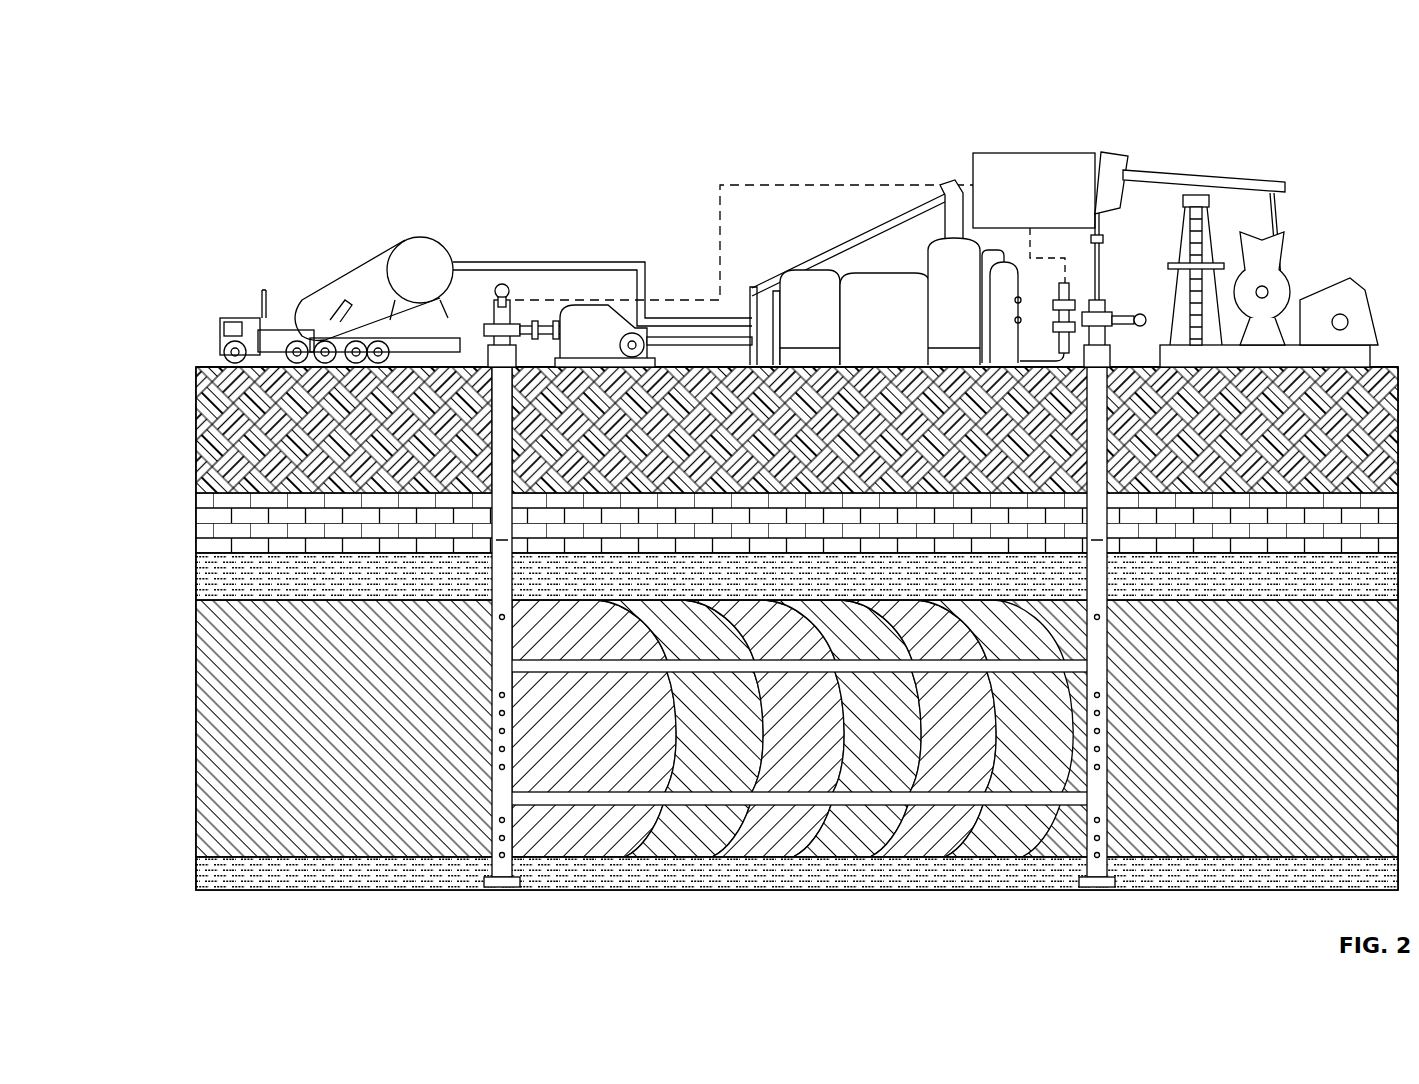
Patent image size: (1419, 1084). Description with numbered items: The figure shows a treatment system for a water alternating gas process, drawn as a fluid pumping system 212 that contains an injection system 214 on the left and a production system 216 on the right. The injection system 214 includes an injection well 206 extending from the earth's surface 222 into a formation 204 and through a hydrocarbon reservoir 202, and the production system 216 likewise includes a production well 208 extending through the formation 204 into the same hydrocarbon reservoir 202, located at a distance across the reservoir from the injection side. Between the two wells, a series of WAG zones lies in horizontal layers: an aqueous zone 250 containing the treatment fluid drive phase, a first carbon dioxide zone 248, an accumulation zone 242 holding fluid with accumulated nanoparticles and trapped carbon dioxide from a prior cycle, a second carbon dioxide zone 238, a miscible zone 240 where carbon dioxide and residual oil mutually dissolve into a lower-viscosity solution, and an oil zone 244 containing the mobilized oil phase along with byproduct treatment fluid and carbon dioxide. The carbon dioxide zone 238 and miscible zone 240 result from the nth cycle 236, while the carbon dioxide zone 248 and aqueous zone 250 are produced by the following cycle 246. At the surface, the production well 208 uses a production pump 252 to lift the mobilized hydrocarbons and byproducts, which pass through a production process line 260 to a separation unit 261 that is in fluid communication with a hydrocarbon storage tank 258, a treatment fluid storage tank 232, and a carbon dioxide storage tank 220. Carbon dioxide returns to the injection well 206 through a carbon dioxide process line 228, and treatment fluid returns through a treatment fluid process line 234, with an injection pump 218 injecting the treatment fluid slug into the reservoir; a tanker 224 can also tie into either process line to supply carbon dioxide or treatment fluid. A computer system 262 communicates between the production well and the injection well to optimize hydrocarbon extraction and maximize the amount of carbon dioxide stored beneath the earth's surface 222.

The hydrocarbon reservoir 202 is at (1230, 835).
The formation 204 is at (183, 367).
The injection well 206 is at (474, 436).
The production well 208 is at (1153, 436).
The fluid pumping system 212 is at (1399, 118).
The injection system 214 is at (196, 200).
The production system 216 is at (716, 167).
The injection pump 218 is at (592, 303).
The carbon dioxide storage tank 220 is at (782, 282).
The earth's surface 222 is at (197, 366).
The tanker 224 is at (307, 277).
The carbon dioxide process line 228 is at (470, 262).
The treatment fluid storage tank 232 is at (822, 366).
The treatment fluid process line 234 is at (716, 330).
The nth cycle 236 is at (1086, 586).
The second carbon dioxide zone 238 is at (875, 833).
The miscible zone 240 is at (940, 833).
The accumulation zone 242 is at (773, 833).
The oil zone 244 is at (1020, 833).
The (n+1)th cycle 246 is at (515, 598).
The first carbon dioxide zone 248 is at (673, 833).
The aqueous zone 250 is at (575, 835).
The production pump 252 is at (1283, 188).
The hydrocarbon storage tank 258 is at (900, 366).
The production process line 260 is at (1055, 366).
The separation unit 261 is at (976, 270).
The computer system 262 is at (1085, 190).